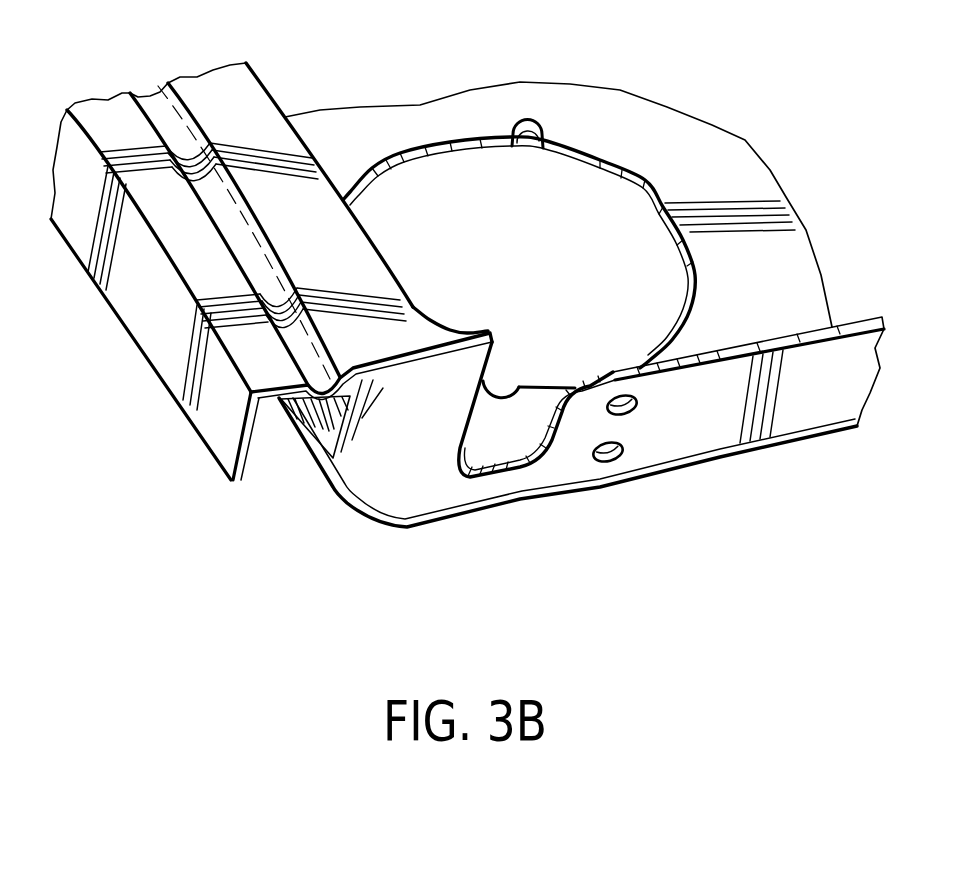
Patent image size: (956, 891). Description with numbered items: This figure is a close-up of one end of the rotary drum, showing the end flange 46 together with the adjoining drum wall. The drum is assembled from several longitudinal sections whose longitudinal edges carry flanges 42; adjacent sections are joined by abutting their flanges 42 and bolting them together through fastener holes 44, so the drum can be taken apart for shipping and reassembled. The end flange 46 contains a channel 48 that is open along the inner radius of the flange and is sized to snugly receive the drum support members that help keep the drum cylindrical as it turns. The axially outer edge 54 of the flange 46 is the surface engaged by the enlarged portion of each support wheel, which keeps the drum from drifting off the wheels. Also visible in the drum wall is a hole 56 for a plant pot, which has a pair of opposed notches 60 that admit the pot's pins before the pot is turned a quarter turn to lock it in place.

The flange 42 is at (825, 407).
The fastener holes 44 is at (610, 462).
The flange 46 is at (110, 117).
The channel 48 is at (272, 440).
The axially outer edge 54 is at (135, 297).
The hole 56 is at (590, 207).
The notches 60 is at (532, 135).